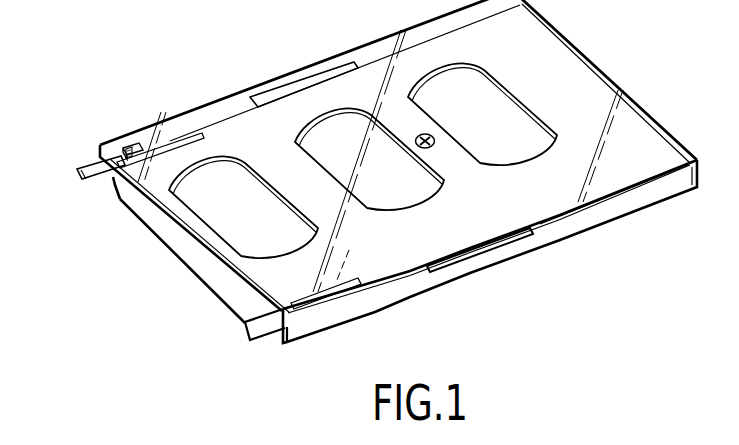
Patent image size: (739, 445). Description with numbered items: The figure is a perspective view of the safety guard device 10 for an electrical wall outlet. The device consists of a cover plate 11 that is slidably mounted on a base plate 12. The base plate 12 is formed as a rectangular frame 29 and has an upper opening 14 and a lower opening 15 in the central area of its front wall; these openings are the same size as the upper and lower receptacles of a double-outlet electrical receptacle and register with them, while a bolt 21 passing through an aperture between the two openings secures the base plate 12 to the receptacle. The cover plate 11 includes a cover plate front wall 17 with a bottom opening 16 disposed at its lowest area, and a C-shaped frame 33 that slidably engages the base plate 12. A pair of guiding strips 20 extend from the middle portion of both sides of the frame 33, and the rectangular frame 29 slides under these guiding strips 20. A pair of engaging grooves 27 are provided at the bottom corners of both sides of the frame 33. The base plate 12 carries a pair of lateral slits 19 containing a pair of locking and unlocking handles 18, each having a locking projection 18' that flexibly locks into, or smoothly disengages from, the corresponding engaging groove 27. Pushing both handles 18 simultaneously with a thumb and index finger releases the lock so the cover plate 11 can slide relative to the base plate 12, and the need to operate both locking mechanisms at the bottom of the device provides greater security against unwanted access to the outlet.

The tray assembly 10 is at (622, 62).
The cover plate 11 is at (195, 100).
The base plate 12 is at (112, 197).
The upper opening 14 is at (484, 100).
The lower opening 15 is at (352, 128).
The bottom opening 16 is at (253, 207).
The cover plate front wall 17 is at (197, 233).
The locking and unlocking handle 18 is at (78, 147).
The locking projection 18' is at (97, 122).
The lateral slit 19 is at (170, 140).
The guiding strip 20 is at (263, 97).
The bolt 21 is at (434, 145).
The engaging groove 27 is at (137, 146).
The rectangular frame 29 is at (238, 298).
The C-shaped frame 33 is at (540, 238).